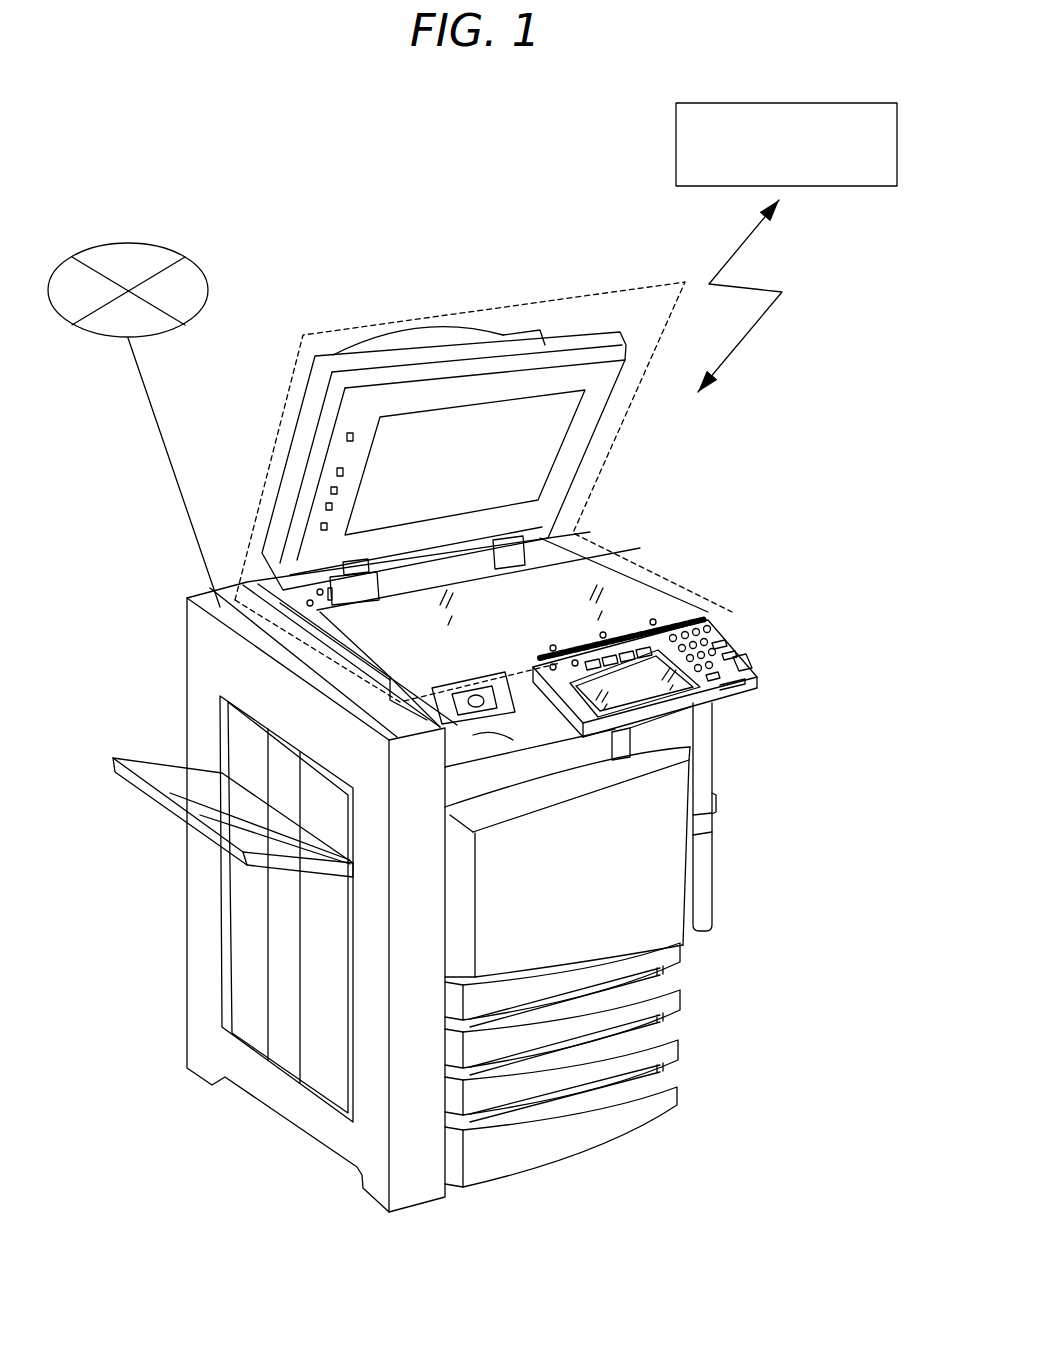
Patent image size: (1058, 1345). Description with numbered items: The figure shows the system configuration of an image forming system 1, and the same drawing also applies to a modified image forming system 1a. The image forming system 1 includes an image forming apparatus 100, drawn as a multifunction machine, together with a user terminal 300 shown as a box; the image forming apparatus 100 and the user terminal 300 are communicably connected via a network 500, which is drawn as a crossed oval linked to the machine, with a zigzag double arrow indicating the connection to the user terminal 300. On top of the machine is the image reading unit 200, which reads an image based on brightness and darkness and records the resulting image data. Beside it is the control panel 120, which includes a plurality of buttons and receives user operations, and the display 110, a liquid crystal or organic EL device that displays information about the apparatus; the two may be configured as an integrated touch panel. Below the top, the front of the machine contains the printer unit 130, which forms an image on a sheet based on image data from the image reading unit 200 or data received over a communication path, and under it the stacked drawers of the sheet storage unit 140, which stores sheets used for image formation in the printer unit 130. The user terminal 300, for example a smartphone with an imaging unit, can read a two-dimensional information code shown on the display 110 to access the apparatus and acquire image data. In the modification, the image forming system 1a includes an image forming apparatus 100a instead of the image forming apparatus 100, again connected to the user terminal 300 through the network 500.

The image forming system 1 is at (472, 643).
The image forming system 1a is at (293, 157).
The image forming apparatus 100 is at (460, 655).
The image forming apparatus 100a is at (528, 130).
The display 110 is at (658, 667).
The control panel 120 is at (737, 662).
The printer unit 130 is at (670, 887).
The sheet storage unit 140 is at (697, 942).
The image reading unit 200 is at (630, 287).
The user terminal 300 is at (832, 103).
The network 500 is at (128, 243).